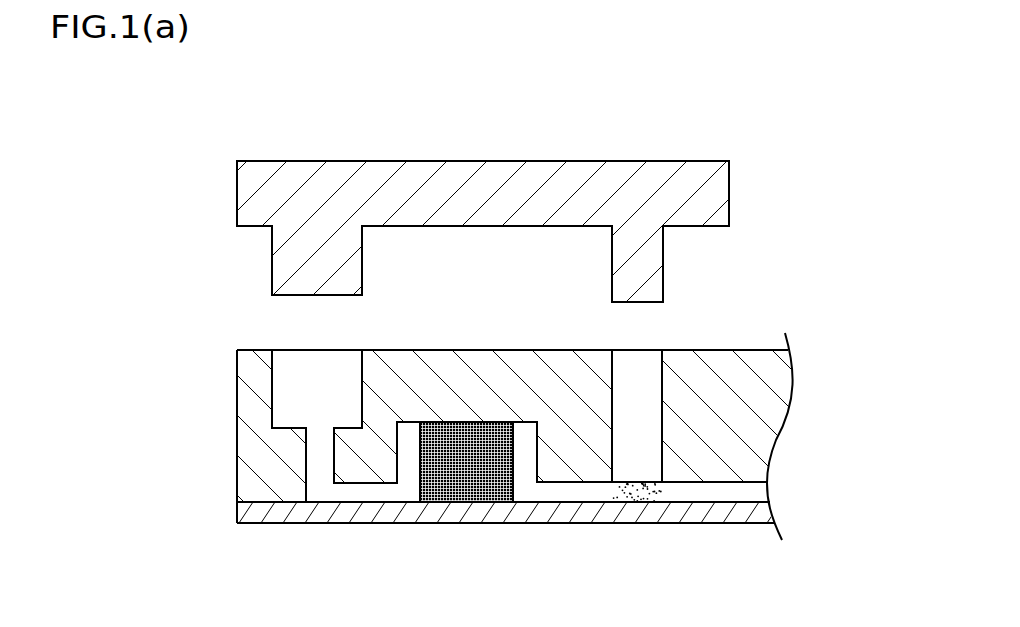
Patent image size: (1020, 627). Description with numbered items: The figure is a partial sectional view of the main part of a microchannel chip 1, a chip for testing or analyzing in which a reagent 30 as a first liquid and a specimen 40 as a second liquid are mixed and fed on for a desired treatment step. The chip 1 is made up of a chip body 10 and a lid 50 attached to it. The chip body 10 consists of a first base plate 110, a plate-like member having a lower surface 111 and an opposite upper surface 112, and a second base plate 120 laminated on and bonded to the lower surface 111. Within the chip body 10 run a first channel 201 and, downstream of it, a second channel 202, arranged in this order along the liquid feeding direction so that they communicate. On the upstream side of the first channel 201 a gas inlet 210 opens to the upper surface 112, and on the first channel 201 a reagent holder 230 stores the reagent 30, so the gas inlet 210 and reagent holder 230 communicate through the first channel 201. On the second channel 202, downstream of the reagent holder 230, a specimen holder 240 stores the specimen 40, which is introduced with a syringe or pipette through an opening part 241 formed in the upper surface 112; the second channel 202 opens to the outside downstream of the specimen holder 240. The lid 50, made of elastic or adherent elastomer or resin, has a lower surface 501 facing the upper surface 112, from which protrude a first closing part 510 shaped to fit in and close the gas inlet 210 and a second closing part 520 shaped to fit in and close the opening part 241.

The microchannel chip 1 is at (763, 161).
The chip body 10 is at (493, 454).
The first base plate 110 is at (498, 454).
The lower surface 111 is at (293, 490).
The upper surface 112 is at (727, 350).
The second base plate 120 is at (250, 514).
The first channel 201 is at (386, 487).
The second channel 202 is at (715, 490).
The gas inlet 210 is at (253, 386).
The reagent holder 230 is at (524, 488).
The specimen holder 240 is at (650, 503).
The opening part 241 is at (635, 377).
The reagent 30 is at (463, 430).
The specimen 40 is at (637, 480).
The lid 50 is at (541, 172).
The lower surface of the lid 501 is at (470, 227).
The first closing part 510 is at (303, 282).
The second closing part 520 is at (643, 301).